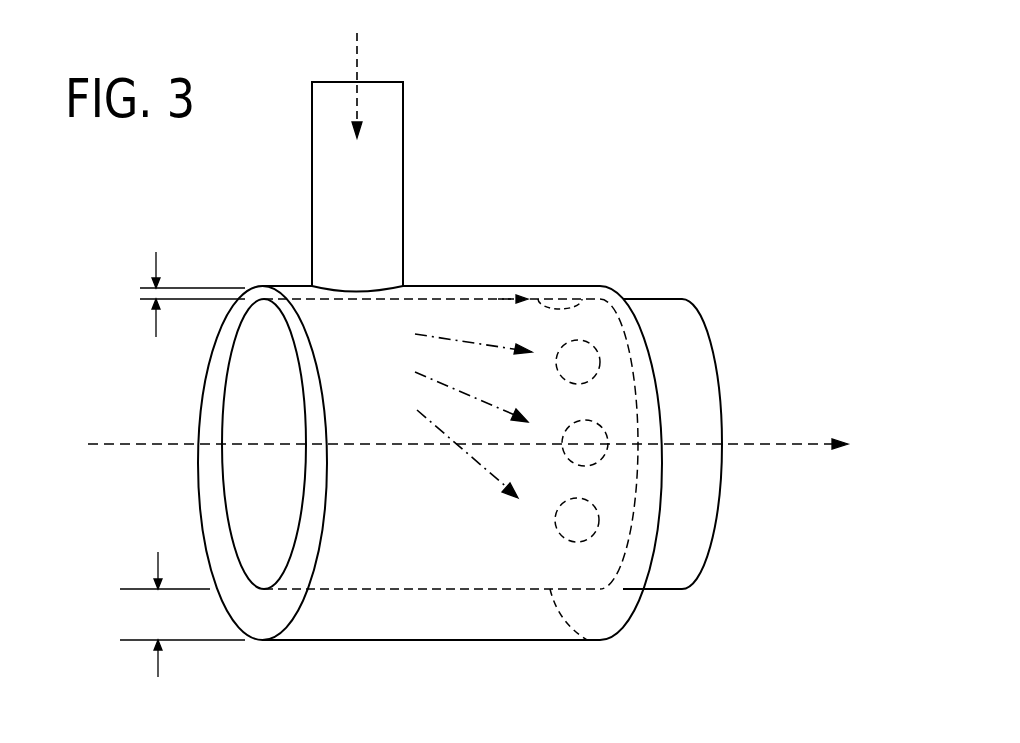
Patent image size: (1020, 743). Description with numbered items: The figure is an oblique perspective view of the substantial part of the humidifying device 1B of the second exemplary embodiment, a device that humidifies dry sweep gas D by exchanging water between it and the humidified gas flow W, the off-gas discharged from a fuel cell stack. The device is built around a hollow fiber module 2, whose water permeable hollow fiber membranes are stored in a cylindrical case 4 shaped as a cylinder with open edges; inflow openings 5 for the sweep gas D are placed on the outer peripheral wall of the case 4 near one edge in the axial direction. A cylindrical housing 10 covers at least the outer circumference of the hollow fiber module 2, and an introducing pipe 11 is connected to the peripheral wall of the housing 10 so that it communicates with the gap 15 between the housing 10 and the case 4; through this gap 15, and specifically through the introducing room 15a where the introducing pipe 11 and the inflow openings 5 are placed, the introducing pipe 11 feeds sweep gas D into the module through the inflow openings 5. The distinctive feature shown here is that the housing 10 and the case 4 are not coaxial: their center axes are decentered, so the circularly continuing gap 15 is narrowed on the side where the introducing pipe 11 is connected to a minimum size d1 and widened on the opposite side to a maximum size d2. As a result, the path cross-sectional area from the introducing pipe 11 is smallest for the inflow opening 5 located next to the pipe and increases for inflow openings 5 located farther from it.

The humidifying device 1B is at (260, 254).
The hollow fiber module 2 is at (660, 292).
The case 4 is at (703, 323).
The inflow openings 5 is at (592, 358).
The housing 10 is at (565, 641).
The introducing pipe 11 is at (403, 138).
The gap 15 is at (511, 379).
The introducing room 15a is at (520, 290).
The sweep gas D is at (357, 52).
The humidified gas flow W is at (780, 443).
The minimum size d1 is at (178, 294).
The maximum size d2 is at (182, 614).